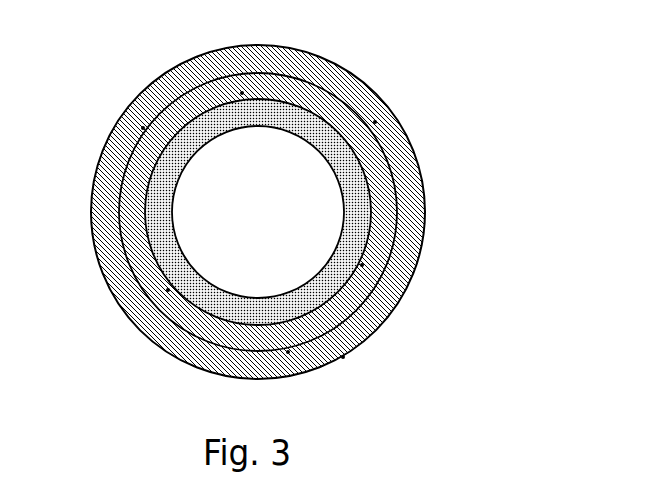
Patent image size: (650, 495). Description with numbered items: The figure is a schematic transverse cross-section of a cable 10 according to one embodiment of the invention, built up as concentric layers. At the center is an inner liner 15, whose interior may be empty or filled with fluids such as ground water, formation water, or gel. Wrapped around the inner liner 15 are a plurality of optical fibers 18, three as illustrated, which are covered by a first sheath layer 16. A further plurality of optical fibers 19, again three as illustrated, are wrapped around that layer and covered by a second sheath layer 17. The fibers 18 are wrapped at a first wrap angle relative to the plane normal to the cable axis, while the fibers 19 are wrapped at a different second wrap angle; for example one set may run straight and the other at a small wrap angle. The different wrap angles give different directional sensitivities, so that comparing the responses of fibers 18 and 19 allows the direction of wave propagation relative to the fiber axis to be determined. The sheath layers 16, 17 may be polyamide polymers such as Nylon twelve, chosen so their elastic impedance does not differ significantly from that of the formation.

The tube 10 is at (296, 208).
The inner liner 15 is at (358, 192).
The first sheath layer 16 is at (383, 226).
The second sheath layer 17 is at (400, 262).
The optical fibers 18 is at (373, 292).
The optical fibers 19 is at (327, 367).